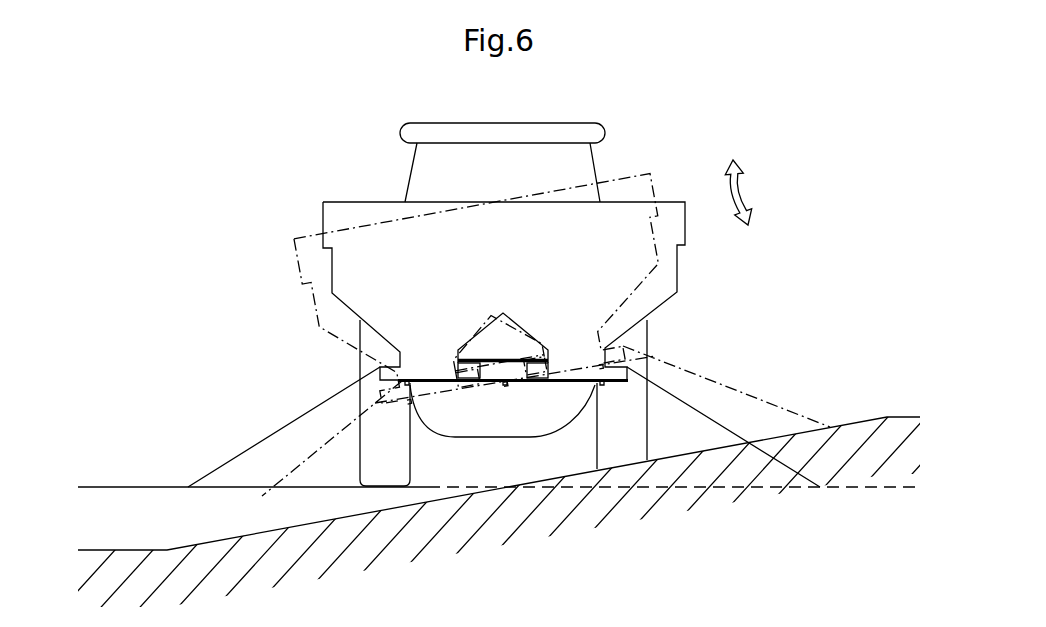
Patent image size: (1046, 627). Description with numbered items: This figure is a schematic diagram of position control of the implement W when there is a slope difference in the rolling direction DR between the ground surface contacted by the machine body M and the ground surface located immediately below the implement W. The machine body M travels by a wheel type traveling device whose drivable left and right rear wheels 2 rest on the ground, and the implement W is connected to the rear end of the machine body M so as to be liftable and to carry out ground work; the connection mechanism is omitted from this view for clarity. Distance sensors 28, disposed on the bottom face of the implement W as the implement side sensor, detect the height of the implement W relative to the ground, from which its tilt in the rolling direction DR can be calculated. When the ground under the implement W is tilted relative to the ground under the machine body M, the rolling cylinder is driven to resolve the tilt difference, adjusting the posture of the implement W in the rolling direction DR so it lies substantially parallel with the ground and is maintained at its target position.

The implement W is at (357, 202).
The machine body M is at (602, 115).
The rolling direction DR is at (743, 190).
The rear wheels 2 is at (360, 368).
The distance sensors 28 is at (505, 386).